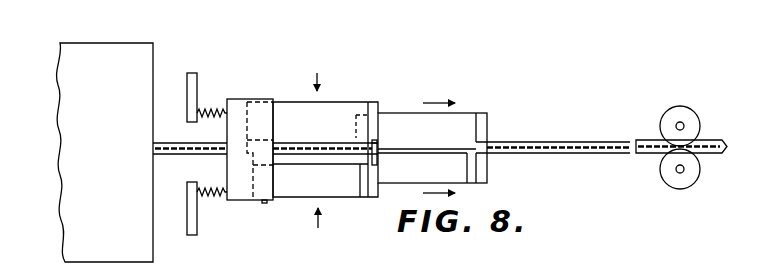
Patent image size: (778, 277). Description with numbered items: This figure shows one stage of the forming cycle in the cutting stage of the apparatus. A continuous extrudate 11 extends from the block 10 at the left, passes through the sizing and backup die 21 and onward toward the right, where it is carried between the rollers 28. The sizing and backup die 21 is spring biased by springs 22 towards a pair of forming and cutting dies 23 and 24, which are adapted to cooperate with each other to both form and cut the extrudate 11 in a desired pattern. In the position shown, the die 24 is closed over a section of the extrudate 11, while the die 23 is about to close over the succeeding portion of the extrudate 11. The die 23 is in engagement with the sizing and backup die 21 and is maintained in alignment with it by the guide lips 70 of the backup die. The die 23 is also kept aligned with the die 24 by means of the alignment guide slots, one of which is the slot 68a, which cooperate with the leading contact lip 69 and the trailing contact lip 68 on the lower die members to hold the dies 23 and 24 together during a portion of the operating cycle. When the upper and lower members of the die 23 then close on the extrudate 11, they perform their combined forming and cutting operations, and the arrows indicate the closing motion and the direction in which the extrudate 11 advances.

The support block 10 is at (118, 55).
The extrudate 11 is at (391, 162).
The sizing and backup die 21 is at (237, 102).
The springs 22 is at (200, 108).
The forming and cutting die 23 is at (348, 102).
The forming and cutting die 24 is at (465, 112).
The feed rollers 28 is at (693, 119).
The trailing contact lip 68 is at (363, 164).
The alignment guide slot 68a is at (377, 143).
The leading contact lip 69 is at (380, 168).
The guide lips 70 is at (248, 130).